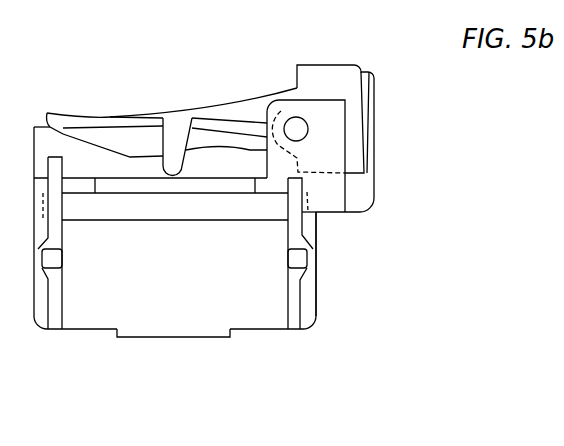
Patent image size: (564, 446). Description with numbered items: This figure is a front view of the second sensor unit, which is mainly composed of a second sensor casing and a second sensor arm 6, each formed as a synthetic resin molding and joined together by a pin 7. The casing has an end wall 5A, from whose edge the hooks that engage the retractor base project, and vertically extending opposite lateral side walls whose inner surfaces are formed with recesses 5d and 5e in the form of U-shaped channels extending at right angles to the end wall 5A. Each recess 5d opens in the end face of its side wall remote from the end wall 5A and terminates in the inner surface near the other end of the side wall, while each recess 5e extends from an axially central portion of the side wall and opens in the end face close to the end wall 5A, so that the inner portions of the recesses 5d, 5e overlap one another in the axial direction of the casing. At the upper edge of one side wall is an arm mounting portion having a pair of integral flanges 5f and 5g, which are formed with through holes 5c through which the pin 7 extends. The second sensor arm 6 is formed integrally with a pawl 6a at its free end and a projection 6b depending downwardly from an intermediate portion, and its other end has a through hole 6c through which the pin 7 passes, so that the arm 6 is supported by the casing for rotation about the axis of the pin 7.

The end wall 5A is at (98, 320).
The through holes 5c is at (318, 310).
The recess 5d is at (310, 263).
The recess 5e is at (316, 226).
The flange 5f is at (376, 97).
The flange 5g is at (378, 196).
The second sensor arm 6 is at (126, 115).
The pawl 6a is at (53, 117).
The projection 6b is at (177, 150).
The through hole 6c is at (308, 130).
The pin 7 is at (289, 122).